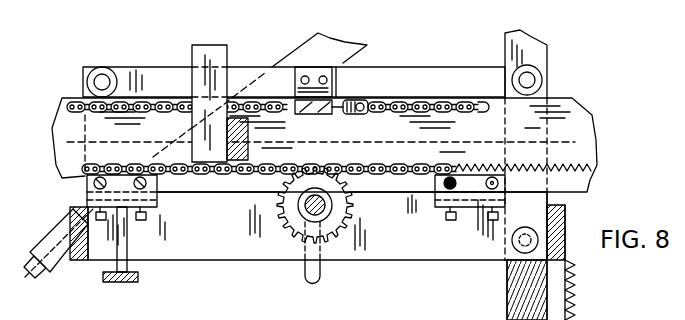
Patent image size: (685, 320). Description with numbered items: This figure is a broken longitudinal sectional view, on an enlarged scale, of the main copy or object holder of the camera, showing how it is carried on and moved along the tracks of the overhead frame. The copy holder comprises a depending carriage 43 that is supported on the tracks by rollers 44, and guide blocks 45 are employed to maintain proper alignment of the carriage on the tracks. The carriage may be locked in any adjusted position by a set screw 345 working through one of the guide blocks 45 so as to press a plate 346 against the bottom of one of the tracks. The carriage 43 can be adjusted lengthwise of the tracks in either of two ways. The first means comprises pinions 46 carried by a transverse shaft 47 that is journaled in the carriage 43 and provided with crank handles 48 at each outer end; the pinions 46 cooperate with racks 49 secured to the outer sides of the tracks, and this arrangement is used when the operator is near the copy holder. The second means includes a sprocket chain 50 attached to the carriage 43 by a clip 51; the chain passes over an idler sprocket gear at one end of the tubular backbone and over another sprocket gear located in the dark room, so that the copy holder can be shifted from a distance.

The depending carriage 43 is at (415, 250).
The rollers 44 is at (537, 77).
The guide blocks 45 is at (148, 210).
The pinions 46 is at (345, 200).
The transverse shaft 47 is at (308, 210).
The crank handles 48 is at (320, 277).
The racks 49 is at (572, 145).
The sprocket chain 50 is at (398, 105).
The clip 51 is at (340, 97).
The set screw 345 is at (103, 280).
The plate 346 is at (88, 193).